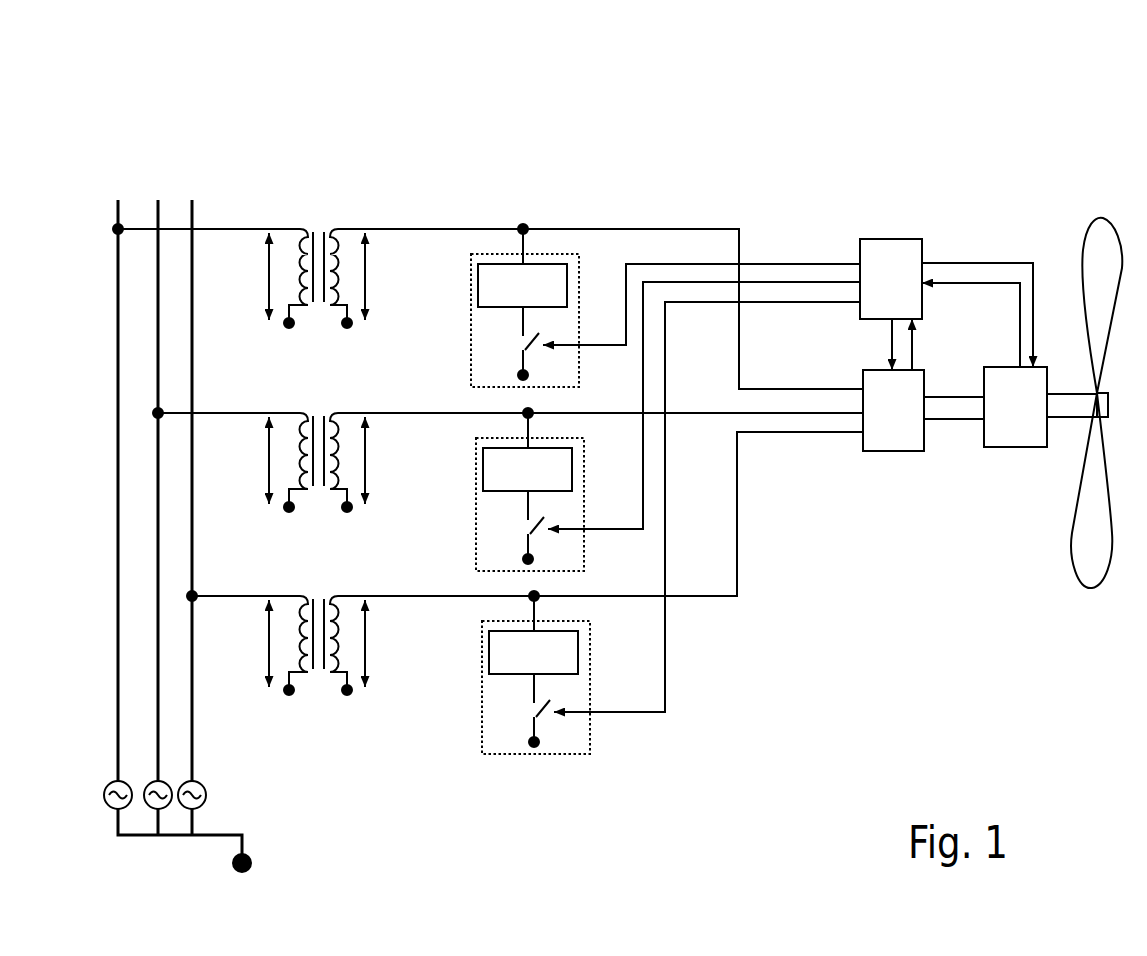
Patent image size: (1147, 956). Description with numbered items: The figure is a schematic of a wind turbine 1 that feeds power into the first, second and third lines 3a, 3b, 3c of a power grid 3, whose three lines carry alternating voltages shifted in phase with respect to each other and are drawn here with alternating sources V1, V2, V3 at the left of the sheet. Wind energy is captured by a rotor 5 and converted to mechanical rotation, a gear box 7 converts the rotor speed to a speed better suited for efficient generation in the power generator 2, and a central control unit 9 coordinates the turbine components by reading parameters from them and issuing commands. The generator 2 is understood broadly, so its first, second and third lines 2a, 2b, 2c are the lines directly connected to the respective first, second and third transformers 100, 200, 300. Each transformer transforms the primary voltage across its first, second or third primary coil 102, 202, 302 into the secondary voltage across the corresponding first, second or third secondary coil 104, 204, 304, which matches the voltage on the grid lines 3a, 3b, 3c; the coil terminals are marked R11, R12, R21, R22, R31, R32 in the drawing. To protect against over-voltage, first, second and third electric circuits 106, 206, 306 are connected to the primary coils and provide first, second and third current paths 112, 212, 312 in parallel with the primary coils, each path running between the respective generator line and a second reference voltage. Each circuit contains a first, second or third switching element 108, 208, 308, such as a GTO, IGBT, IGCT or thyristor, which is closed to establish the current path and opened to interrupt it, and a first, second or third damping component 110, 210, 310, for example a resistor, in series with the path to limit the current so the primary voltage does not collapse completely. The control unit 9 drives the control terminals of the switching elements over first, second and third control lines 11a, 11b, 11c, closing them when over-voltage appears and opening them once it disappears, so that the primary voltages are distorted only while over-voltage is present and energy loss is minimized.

The wind turbine 1 is at (583, 122).
The power grid 3 is at (160, 167).
The first line of power grid 3a is at (118, 262).
The second line of power grid 3b is at (158, 332).
The third line of power grid 3c is at (192, 393).
The first transformer 100 is at (314, 226).
The first primary coil 102 is at (338, 230).
The first secondary coil 104 is at (300, 230).
The first electric circuit 106 is at (471, 270).
The first switching element 108 is at (530, 345).
The first damping component 110 is at (478, 295).
The first current path 112 is at (520, 320).
The second transformer 200 is at (314, 410).
The second primary coil 202 is at (338, 414).
The second secondary coil 204 is at (300, 414).
The second electric circuit 206 is at (476, 454).
The second switching element 208 is at (535, 529).
The second damping component 210 is at (483, 479).
The second current path 212 is at (525, 504).
The third transformer 300 is at (314, 593).
The third primary coil 302 is at (338, 597).
The third secondary coil 304 is at (300, 597).
The third electric circuit 306 is at (482, 637).
The third switching element 308 is at (541, 712).
The third damping component 310 is at (489, 662).
The third current path 312 is at (531, 687).
The first control line 11a is at (732, 264).
The second control line 11b is at (710, 282).
The third control line 11c is at (688, 302).
The power generator 2 is at (863, 374).
The first line of power generator 2a is at (739, 343).
The second line of power generator 2b is at (687, 413).
The third line of power generator 2c is at (737, 523).
The rotor 5 is at (1087, 230).
The gear box 7 is at (986, 367).
The central control unit 9 is at (892, 239).
The first secondary terminal R11 is at (280, 339).
The first primary terminal R12 is at (358, 339).
The second secondary terminal R21 is at (280, 523).
The second primary terminal R22 is at (358, 523).
The third secondary terminal R31 is at (280, 706).
The third primary terminal R32 is at (358, 706).
The first phase voltage source V1 is at (111, 783).
The second phase voltage source V2 is at (150, 783).
The third phase voltage source V3 is at (185, 783).